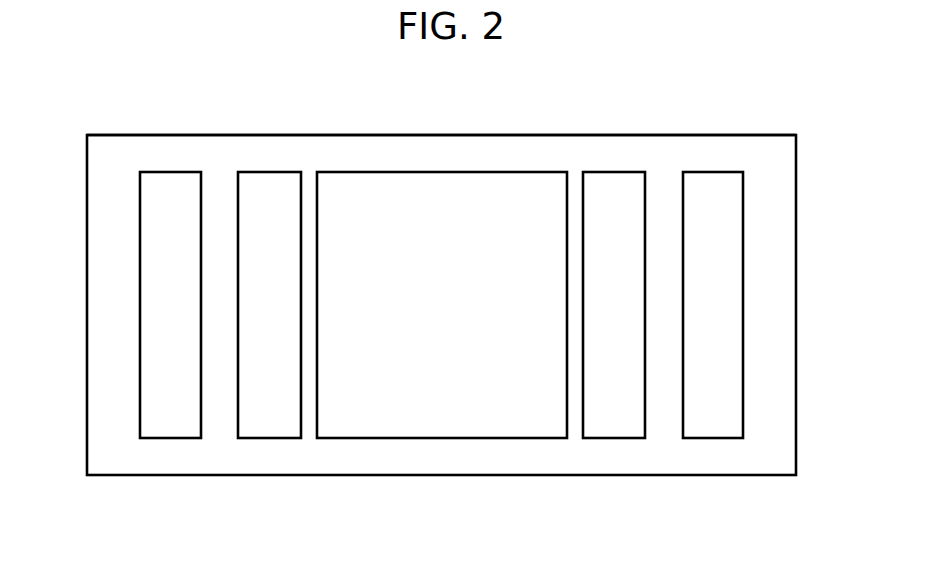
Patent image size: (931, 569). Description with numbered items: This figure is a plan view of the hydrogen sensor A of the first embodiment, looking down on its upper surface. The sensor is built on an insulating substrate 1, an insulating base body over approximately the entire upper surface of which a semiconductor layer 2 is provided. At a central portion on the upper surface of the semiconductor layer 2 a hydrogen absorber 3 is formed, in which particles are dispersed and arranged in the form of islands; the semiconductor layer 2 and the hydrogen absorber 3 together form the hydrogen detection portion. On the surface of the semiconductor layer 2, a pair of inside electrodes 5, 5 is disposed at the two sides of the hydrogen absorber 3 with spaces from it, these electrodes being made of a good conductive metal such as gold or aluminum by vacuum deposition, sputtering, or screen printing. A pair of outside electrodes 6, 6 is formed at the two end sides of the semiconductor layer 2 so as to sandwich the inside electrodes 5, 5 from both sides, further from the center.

The insulating substrate 1 is at (797, 303).
The semiconductor layer 2 is at (673, 143).
The hydrogen absorber 3 is at (468, 185).
The inside electrodes 5 is at (272, 427).
The outside electrodes 6 is at (139, 218).
The hydrogen sensor A is at (562, 124).